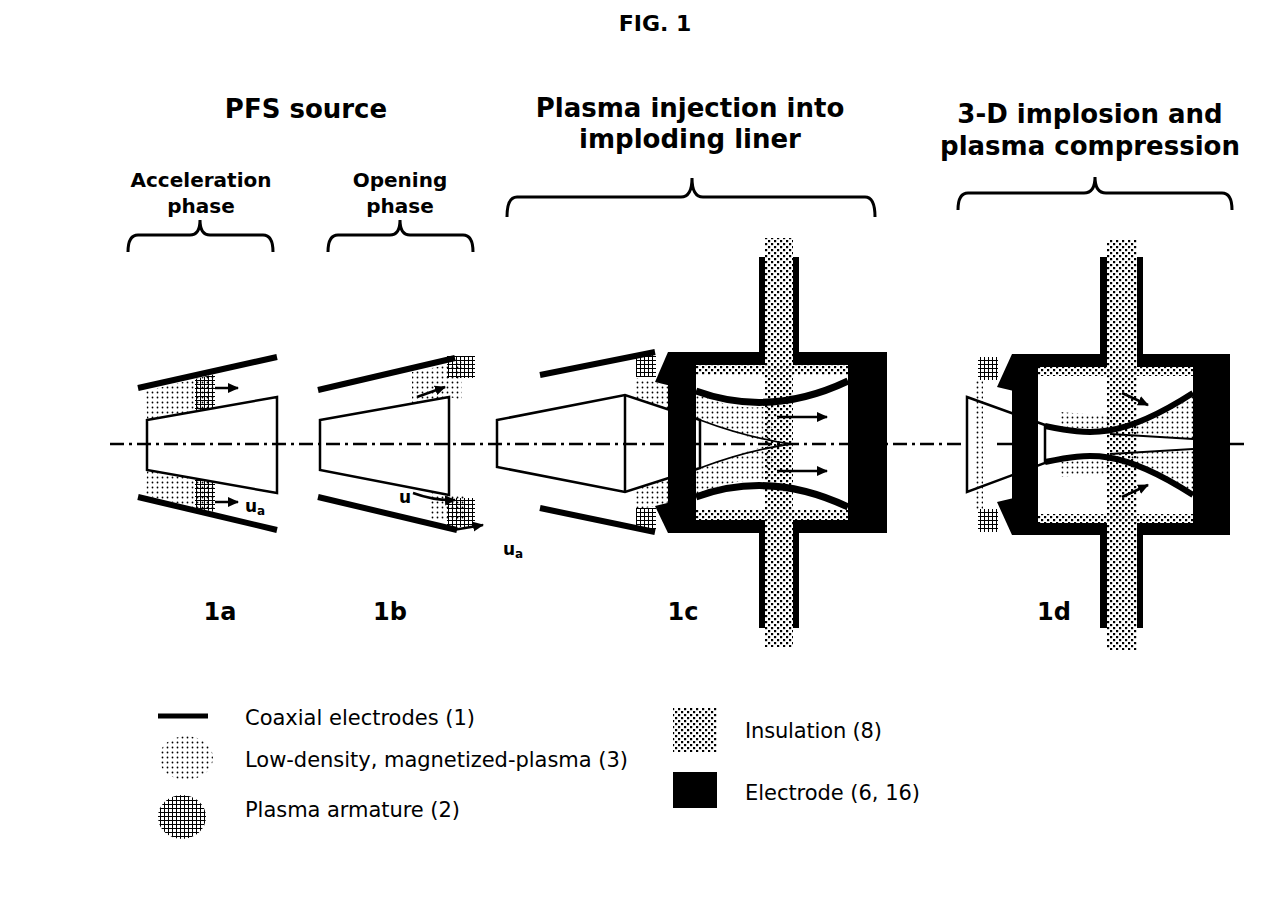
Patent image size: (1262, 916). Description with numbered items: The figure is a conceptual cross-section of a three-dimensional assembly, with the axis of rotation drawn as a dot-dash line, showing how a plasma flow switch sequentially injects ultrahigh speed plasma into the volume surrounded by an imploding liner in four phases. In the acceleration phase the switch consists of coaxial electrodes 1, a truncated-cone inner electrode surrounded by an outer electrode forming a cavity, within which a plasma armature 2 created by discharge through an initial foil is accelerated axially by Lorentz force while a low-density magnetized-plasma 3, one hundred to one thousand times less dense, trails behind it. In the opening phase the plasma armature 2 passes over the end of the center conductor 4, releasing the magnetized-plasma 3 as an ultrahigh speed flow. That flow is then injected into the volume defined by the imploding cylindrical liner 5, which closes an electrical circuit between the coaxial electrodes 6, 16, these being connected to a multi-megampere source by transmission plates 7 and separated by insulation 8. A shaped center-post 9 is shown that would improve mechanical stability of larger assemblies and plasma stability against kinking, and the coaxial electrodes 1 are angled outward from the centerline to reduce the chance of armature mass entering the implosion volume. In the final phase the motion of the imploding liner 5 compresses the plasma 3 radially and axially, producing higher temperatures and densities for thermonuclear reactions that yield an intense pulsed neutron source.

The coaxial electrodes 1 is at (222, 363).
The plasma armature 2 is at (200, 512).
The magnetized-plasma 3 is at (137, 486).
The center conductor 4 is at (278, 396).
The imploding cylindrical liner 5 is at (1132, 467).
The coaxial electrode 6 is at (889, 375).
The transmission plates 7 is at (800, 297).
The insulation 8 is at (795, 247).
The shaped center-post 9 is at (628, 392).
The coaxial electrode 16 is at (698, 534).